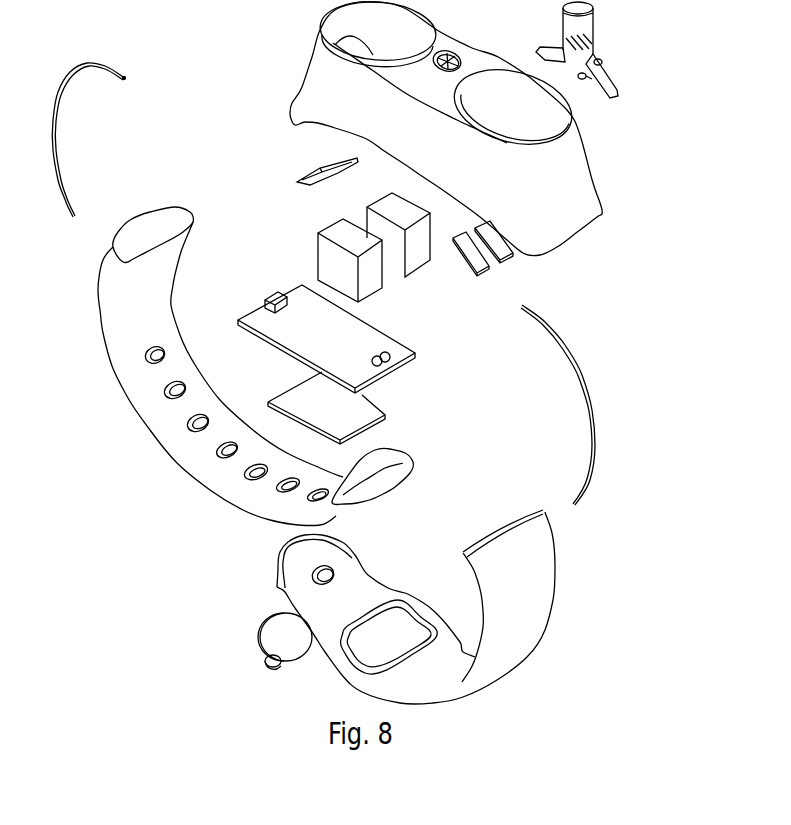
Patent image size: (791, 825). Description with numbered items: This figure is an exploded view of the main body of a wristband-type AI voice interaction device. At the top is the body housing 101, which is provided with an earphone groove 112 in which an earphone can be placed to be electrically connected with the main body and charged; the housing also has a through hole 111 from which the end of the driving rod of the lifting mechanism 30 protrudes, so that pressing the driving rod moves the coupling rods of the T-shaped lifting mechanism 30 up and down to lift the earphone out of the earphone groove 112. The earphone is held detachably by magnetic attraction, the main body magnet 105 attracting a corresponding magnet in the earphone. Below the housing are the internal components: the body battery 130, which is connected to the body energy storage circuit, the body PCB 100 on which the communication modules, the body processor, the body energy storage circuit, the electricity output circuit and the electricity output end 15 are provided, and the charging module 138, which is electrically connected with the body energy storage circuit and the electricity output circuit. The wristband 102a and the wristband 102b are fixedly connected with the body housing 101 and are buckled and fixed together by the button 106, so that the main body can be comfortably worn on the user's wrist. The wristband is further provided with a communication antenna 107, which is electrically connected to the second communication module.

The body housing 101 is at (565, 190).
The through hole 111 is at (453, 53).
The earphone groove 112 is at (530, 103).
The lifting mechanism 30 is at (580, 30).
The communication antenna 107 is at (125, 78).
The main body magnet 105 is at (303, 177).
The body battery 130 is at (370, 278).
The body PCB 100 is at (337, 337).
The electricity output end 15 is at (390, 360).
The charging module 138 is at (350, 428).
The wristband 102a is at (385, 484).
The wristband 102b is at (493, 587).
The button 106 is at (280, 636).